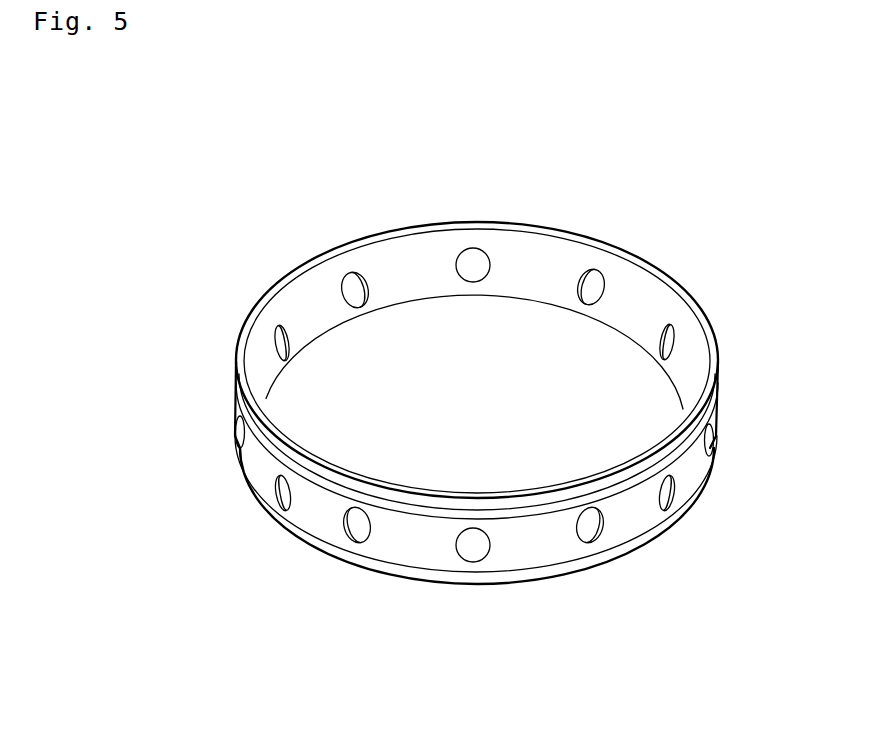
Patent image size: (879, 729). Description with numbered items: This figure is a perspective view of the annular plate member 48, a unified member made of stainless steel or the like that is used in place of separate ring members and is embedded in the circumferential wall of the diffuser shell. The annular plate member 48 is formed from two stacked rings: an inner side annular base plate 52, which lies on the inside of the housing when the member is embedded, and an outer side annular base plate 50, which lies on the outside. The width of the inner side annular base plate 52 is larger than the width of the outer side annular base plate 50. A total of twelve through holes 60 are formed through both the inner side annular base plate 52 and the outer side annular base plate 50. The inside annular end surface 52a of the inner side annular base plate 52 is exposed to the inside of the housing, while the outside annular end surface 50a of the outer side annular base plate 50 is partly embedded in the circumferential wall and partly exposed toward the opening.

The annular plate member 48 is at (494, 377).
The outer side annular base plate 50 is at (502, 515).
The outside annular end surface 50a is at (533, 543).
The inner side annular base plate 52 is at (424, 223).
The inside annular end surface 52a is at (393, 289).
The through holes 60 is at (491, 262).